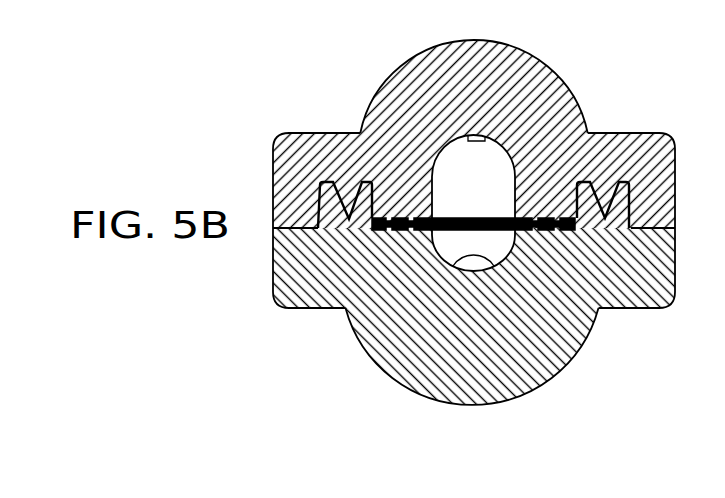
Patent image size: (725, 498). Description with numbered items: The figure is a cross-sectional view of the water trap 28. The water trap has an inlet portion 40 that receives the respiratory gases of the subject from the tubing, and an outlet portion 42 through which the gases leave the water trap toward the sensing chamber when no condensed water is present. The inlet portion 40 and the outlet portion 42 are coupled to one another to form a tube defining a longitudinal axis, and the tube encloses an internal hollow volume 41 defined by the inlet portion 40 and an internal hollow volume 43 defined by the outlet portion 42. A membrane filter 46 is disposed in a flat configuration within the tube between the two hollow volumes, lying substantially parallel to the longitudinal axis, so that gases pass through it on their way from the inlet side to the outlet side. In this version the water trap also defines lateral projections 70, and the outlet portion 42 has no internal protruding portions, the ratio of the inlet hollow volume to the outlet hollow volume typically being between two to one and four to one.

The water trap 28 is at (242, 115).
The inlet portion 40 is at (526, 62).
The internal hollow volume 41 is at (487, 165).
The outlet portion 42 is at (383, 340).
The internal hollow volume 43 is at (497, 245).
The membrane filter 46 is at (460, 214).
The lateral projections 70 is at (655, 151).